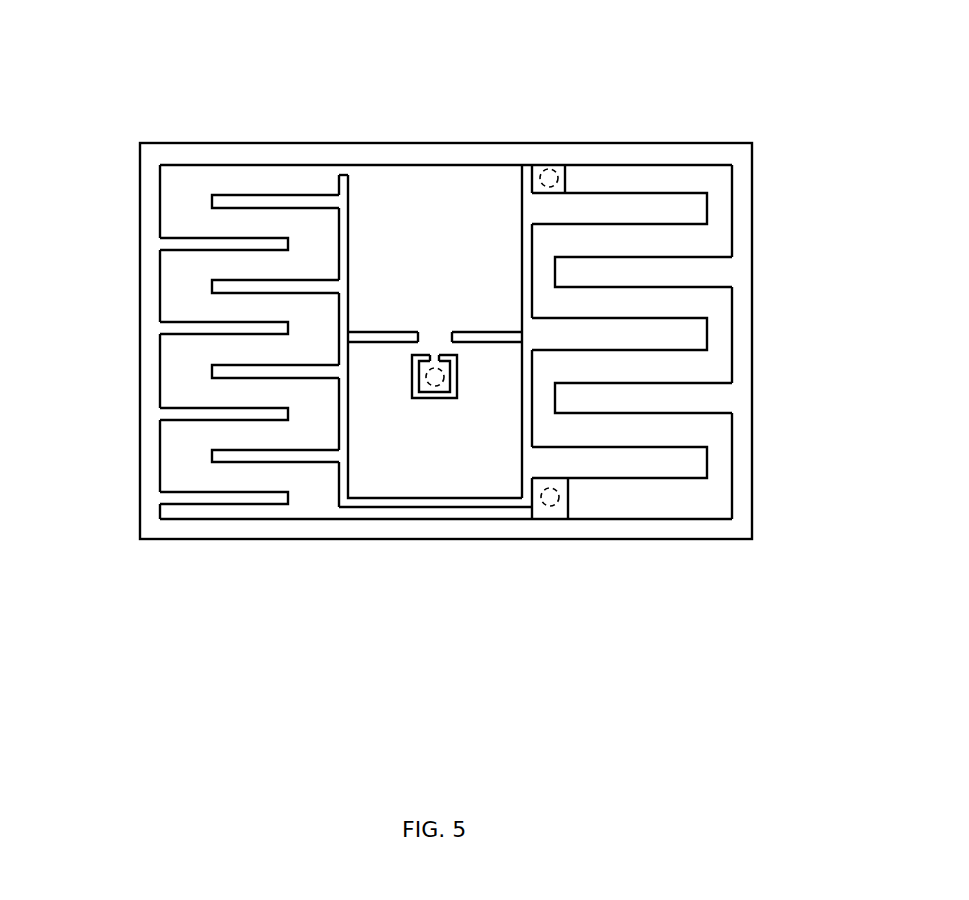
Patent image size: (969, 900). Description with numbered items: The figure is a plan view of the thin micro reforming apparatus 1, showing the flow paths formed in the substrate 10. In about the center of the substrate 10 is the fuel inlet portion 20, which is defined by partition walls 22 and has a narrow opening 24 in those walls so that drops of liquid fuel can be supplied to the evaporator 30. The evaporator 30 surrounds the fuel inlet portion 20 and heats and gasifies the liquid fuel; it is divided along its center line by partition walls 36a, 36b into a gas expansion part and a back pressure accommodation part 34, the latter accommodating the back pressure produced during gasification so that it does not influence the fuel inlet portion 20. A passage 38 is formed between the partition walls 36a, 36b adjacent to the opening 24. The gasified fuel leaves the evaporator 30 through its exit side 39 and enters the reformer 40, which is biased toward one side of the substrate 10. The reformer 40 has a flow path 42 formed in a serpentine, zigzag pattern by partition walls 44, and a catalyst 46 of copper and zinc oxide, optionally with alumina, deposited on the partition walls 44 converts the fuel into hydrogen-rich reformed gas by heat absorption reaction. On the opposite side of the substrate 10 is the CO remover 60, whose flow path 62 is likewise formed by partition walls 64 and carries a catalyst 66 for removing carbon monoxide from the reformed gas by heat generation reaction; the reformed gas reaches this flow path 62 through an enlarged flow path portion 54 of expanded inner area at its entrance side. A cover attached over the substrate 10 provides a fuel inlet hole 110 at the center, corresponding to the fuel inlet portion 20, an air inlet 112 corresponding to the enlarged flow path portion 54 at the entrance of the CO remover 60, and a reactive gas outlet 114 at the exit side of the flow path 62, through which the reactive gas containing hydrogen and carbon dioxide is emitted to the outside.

The thin micro reforming apparatus 1 is at (704, 101).
The substrate 10 is at (740, 175).
The fuel inlet portion 20 is at (445, 408).
The partition walls 22 is at (457, 380).
The opening 24 is at (437, 356).
The evaporator 30 is at (465, 195).
The back pressure accommodation part 34 is at (500, 477).
The partition wall 36a is at (383, 340).
The partition wall 36b is at (490, 340).
The passage 38 is at (433, 340).
The exit side 39 is at (340, 165).
The reformer 40 is at (195, 297).
The flow path 42 is at (249, 342).
The partition walls 44 is at (192, 328).
The catalyst 46 is at (182, 465).
The enlarged flow path portion 54 is at (550, 500).
The CO remover 60 is at (704, 306).
The flow path 62 is at (632, 342).
The partition walls 64 is at (693, 262).
The catalyst 66 is at (710, 428).
The fuel inlet hole 110 is at (433, 381).
The air inlet 112 is at (558, 490).
The reactive gas outlet 114 is at (549, 178).